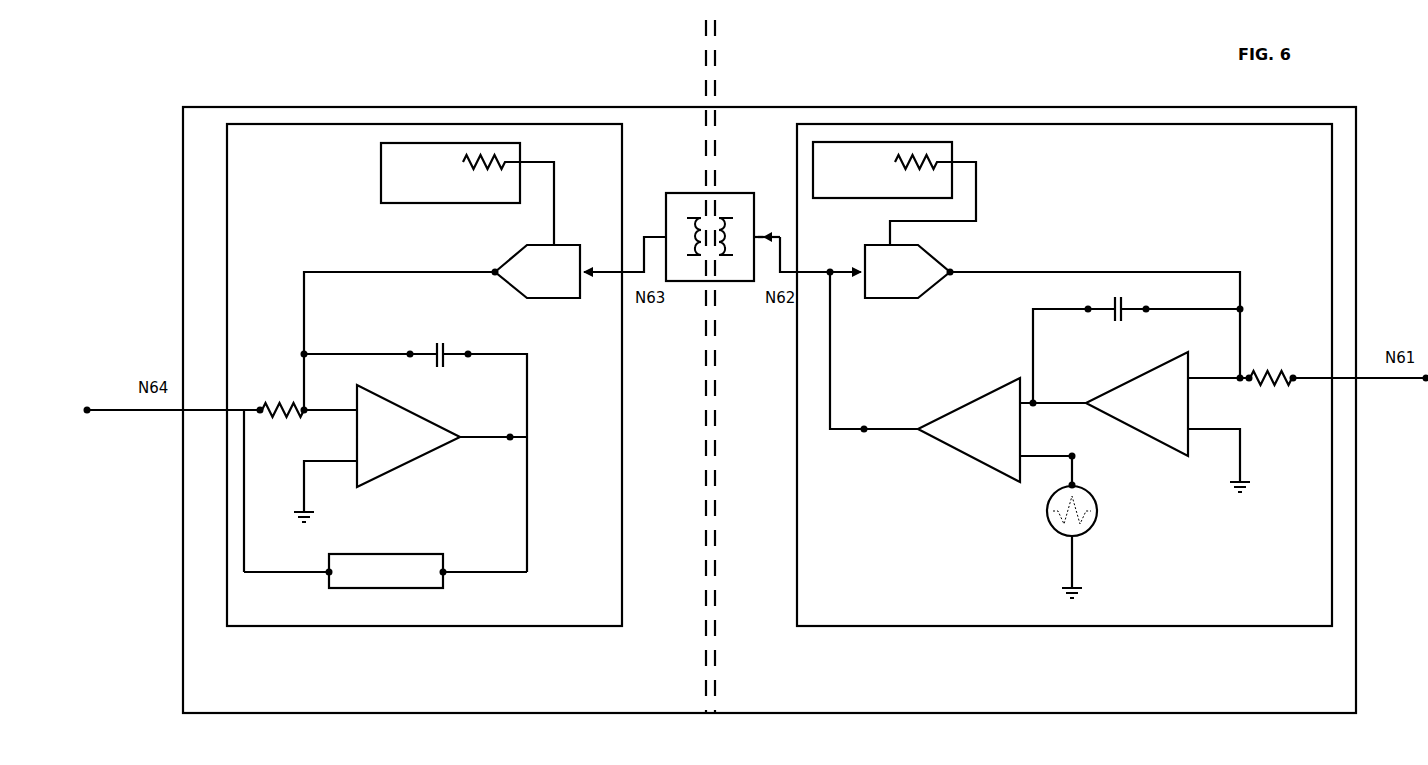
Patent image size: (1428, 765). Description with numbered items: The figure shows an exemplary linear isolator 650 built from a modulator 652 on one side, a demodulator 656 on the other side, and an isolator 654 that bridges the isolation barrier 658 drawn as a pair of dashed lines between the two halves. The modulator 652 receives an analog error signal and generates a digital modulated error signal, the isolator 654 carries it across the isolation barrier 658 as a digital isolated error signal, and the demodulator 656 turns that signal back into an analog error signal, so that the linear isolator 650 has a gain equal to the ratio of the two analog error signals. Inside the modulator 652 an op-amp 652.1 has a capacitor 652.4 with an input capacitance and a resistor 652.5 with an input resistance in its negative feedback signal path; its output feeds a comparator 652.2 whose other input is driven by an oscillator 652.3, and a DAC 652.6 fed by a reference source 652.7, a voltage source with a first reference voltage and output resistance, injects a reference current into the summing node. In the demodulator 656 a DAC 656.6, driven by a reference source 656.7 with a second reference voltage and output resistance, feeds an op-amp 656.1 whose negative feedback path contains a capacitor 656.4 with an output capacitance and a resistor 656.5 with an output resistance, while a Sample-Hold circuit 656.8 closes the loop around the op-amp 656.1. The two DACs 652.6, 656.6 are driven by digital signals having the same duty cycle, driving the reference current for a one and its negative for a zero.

The linear isolator 650 is at (216, 706).
The modulator 652 is at (1277, 165).
The demodulator 656 is at (260, 168).
The isolator 654 is at (727, 193).
The isolation barrier 658 is at (752, 57).
The op-amp 652.1 is at (1163, 408).
The comparator 652.2 is at (990, 437).
The oscillator 652.3 is at (1146, 508).
The capacitor 652.4 is at (1128, 356).
The resistor 652.5 is at (1293, 360).
The digital-to-analog converter (DAC) 652.6 is at (921, 291).
The reference source 652.7 is at (860, 168).
The op-amp 656.1 is at (420, 445).
The capacitor 656.4 is at (465, 344).
The resistor 656.5 is at (291, 394).
The DAC 656.6 is at (567, 291).
The reference source 656.7 is at (428, 168).
The Sample-Hold (S/H) circuit 656.8 is at (419, 581).